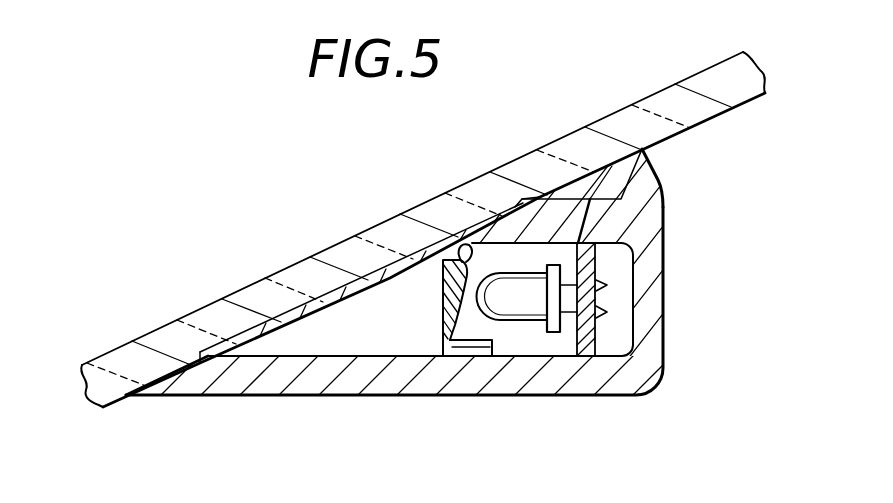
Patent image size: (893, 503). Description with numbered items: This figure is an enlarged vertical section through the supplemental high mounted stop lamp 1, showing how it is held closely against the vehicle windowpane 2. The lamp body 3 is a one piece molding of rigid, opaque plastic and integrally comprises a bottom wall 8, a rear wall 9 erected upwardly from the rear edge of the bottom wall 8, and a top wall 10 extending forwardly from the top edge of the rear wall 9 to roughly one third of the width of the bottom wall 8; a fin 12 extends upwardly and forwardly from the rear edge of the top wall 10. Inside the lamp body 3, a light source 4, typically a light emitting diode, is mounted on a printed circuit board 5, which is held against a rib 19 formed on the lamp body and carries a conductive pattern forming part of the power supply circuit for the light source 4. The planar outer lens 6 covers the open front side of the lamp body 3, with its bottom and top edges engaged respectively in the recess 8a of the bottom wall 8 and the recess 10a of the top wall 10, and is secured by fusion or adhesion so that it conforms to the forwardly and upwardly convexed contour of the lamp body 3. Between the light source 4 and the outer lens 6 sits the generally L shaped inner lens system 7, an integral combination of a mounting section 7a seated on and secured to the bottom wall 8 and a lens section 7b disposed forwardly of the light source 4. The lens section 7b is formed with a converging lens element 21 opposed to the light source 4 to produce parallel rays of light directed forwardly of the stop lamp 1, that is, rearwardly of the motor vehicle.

The supplemental high mounted stop lamp 1 is at (596, 413).
The vehicle windowpane 2 is at (622, 107).
The lamp body 3 is at (660, 337).
The light source 4 is at (508, 315).
The printed circuit board 5 is at (593, 330).
The outer lens 6 is at (352, 292).
The inner lens system 7 is at (443, 260).
The mounting section 7a is at (474, 357).
The lens section 7b is at (445, 304).
The bottom wall 8 is at (346, 395).
The recess 8a is at (197, 363).
The rear wall 9 is at (660, 268).
The top wall 10 is at (582, 188).
The recess 10a is at (520, 206).
The fin 12 is at (650, 176).
The rib 19 is at (623, 317).
The converging lens element 21 is at (462, 247).